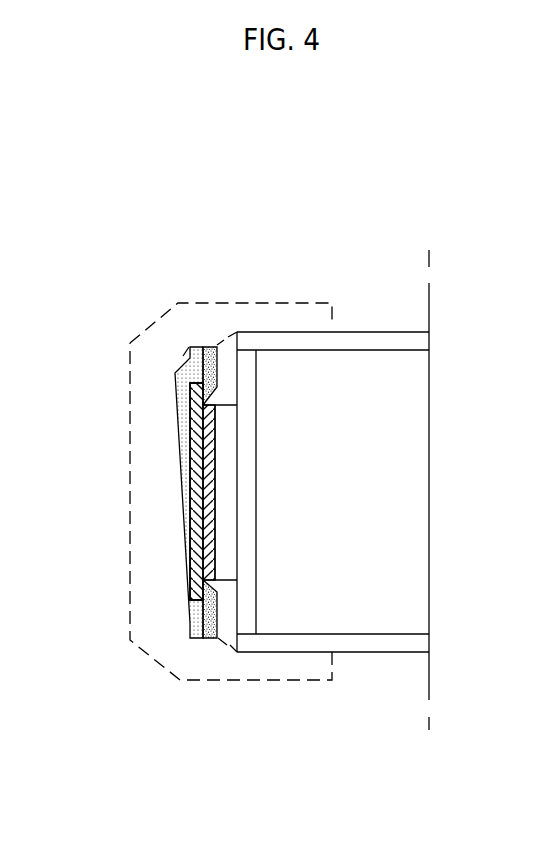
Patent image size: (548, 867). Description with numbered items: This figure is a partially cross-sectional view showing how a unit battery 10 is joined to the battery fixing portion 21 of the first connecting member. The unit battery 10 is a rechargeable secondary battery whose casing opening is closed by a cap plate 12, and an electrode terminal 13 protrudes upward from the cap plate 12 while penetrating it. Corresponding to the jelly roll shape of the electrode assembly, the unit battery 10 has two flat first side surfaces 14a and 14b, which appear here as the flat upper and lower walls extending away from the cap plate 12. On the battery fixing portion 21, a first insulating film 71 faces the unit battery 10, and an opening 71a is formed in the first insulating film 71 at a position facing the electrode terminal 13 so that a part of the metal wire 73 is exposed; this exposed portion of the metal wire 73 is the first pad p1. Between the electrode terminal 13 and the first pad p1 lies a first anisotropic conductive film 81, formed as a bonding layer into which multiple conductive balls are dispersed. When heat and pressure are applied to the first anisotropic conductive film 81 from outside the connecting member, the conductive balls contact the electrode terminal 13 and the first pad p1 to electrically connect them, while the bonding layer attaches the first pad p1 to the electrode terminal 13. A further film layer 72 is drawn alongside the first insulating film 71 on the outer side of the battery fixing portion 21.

The unit battery 10 is at (358, 662).
The cap plate 12 is at (249, 468).
The electrode terminal 13 is at (227, 510).
The first side surface 14a is at (378, 332).
The first side surface 14b is at (400, 653).
The battery fixing portion 21 is at (162, 567).
The first insulating film 71 is at (209, 348).
The opening 71a is at (220, 584).
The cap / cover member 72 is at (183, 378).
The metal wire 73 is at (193, 428).
The first anisotropic conductive film 81 is at (190, 492).